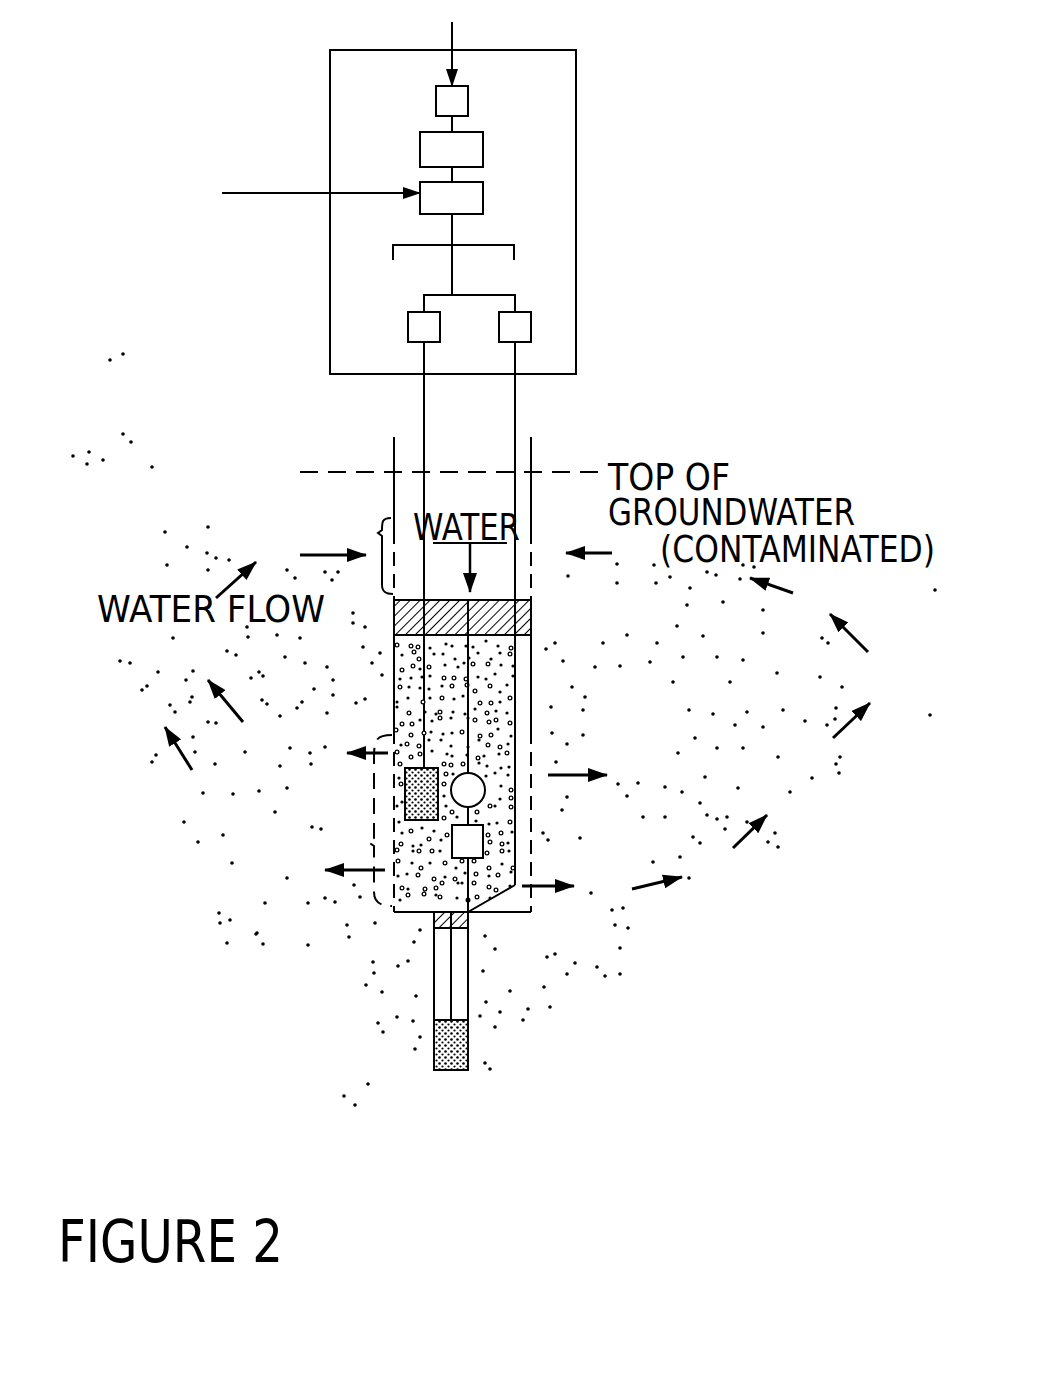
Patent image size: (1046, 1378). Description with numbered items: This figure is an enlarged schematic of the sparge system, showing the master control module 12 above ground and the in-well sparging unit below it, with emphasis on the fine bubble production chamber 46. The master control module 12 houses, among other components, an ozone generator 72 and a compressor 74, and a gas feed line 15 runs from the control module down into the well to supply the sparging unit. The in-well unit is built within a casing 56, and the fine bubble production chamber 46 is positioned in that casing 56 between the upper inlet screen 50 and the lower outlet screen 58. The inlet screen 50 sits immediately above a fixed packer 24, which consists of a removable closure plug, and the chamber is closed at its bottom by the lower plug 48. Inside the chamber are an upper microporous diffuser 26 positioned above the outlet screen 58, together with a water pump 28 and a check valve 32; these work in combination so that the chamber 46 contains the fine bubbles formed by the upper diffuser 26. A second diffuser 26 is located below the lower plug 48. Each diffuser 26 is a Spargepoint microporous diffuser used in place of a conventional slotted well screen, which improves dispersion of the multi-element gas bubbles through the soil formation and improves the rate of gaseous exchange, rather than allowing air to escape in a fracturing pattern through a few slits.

The master control module 12 is at (330, 130).
The ozone generator 72 is at (478, 144).
The compressor 74 is at (479, 194).
The gas feed line 15 is at (423, 401).
The casing 56 is at (393, 493).
The inlet screen 50 is at (377, 530).
The fixed packer 24 is at (532, 618).
The fine bubble production chamber 46 is at (493, 717).
The microporous diffuser 26 is at (403, 795).
The water pump 28 is at (486, 799).
The check valve 32 is at (486, 843).
The outlet screen 58 is at (367, 842).
The lower plug 48 is at (475, 918).